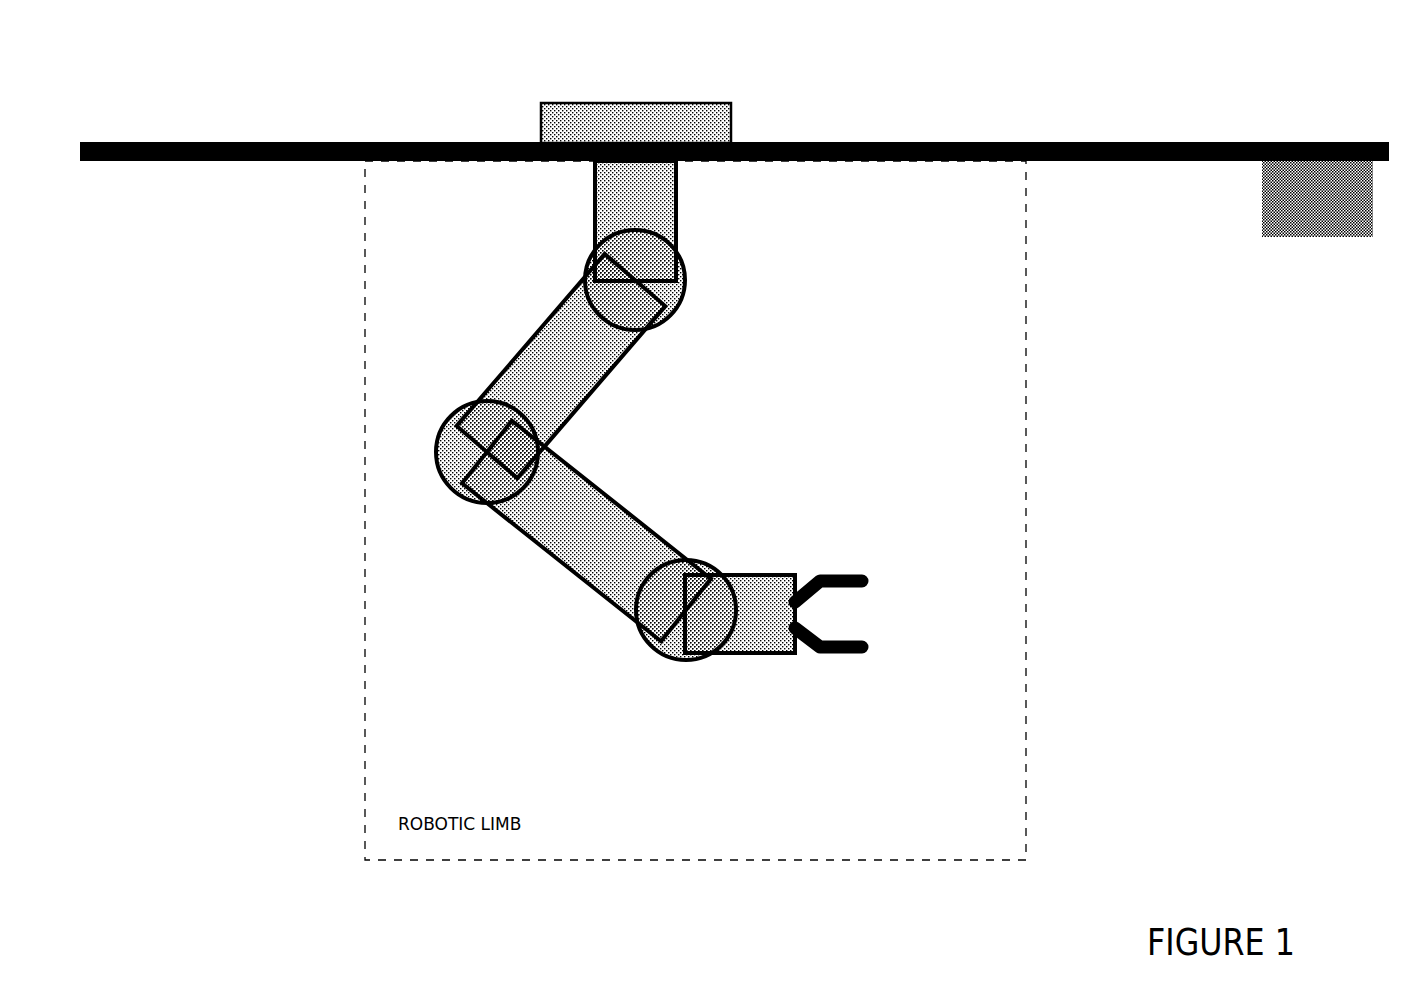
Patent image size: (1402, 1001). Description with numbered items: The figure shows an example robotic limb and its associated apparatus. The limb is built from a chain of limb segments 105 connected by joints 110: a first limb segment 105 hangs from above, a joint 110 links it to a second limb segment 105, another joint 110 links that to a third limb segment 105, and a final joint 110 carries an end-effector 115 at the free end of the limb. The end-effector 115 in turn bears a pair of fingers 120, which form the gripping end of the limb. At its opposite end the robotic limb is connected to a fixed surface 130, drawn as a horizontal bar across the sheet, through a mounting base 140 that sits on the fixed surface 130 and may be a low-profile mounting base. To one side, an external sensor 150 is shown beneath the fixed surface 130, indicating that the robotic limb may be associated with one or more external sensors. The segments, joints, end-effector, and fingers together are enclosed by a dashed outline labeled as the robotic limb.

The limb segment 105 is at (584, 401).
The joint 110 is at (586, 445).
The end-effector 115 is at (768, 655).
The finger 120 is at (860, 577).
The fixed surface 130 is at (925, 142).
The mounting base 140 is at (636, 123).
The external sensor 150 is at (1317, 199).